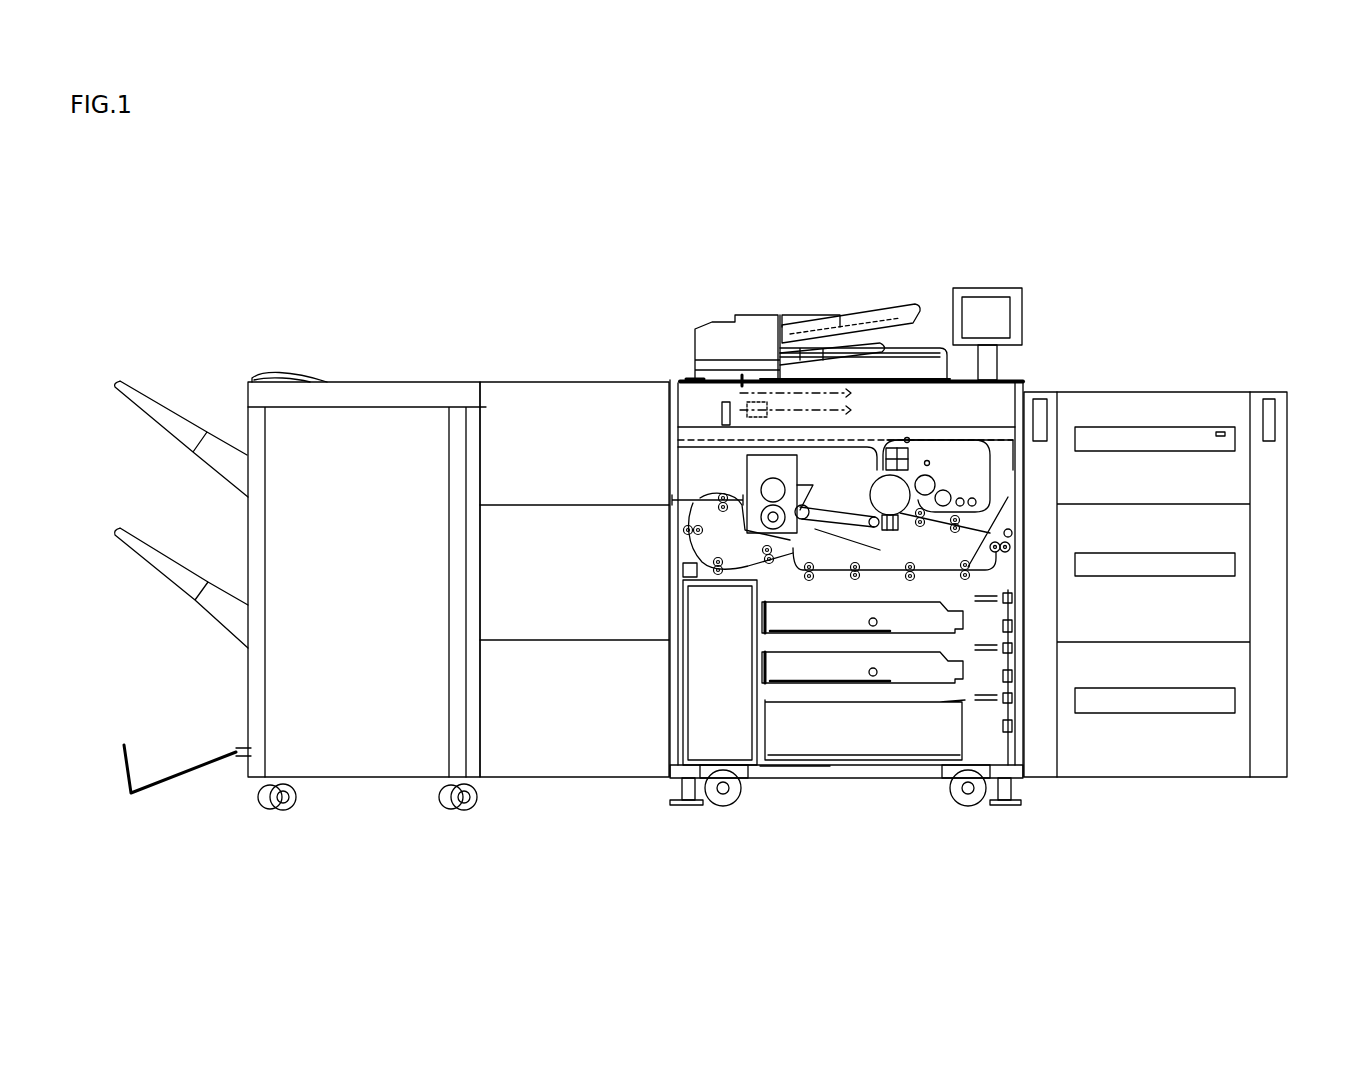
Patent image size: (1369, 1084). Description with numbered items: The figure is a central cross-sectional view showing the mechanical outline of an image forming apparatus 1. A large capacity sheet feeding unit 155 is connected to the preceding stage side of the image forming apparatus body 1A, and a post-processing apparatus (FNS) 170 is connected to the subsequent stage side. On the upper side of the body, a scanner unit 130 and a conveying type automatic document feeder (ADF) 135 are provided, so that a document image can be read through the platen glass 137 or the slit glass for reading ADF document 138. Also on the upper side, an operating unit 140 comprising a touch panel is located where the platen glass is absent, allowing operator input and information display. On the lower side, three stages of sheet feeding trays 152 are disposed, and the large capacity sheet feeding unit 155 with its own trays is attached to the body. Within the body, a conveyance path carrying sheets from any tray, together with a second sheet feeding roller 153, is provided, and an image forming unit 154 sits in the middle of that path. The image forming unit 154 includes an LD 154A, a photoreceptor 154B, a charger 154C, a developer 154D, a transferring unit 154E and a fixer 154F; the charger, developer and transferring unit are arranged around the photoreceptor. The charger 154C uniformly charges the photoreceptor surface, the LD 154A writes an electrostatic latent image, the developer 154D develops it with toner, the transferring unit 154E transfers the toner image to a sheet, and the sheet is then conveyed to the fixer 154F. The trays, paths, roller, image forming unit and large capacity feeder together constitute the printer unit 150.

The image forming apparatus 1 is at (657, 872).
The image forming apparatus body 1A is at (796, 778).
The scanner unit 130 is at (1004, 273).
The conveying type automatic document feeder (ADF) 135 is at (827, 241).
The platen glass 137 is at (794, 296).
The slit glass for reading ADF document 138 is at (514, 241).
The operating unit 140 is at (981, 287).
The printer unit 150 is at (1009, 564).
The sheet feeding trays (1 to 3) 152 is at (825, 764).
The second sheet feeding roller 153 is at (1168, 391).
The image forming unit 154 is at (1010, 405).
The LD 154A is at (933, 450).
The photoreceptor 154B is at (937, 483).
The charger 154C is at (883, 450).
The developer 154D is at (942, 502).
The transferring unit 154E is at (893, 550).
The fixer 154F is at (750, 487).
The large capacity sheet feeding unit 155 is at (1163, 659).
The post-processing apparatus (FNS) 170 is at (273, 542).